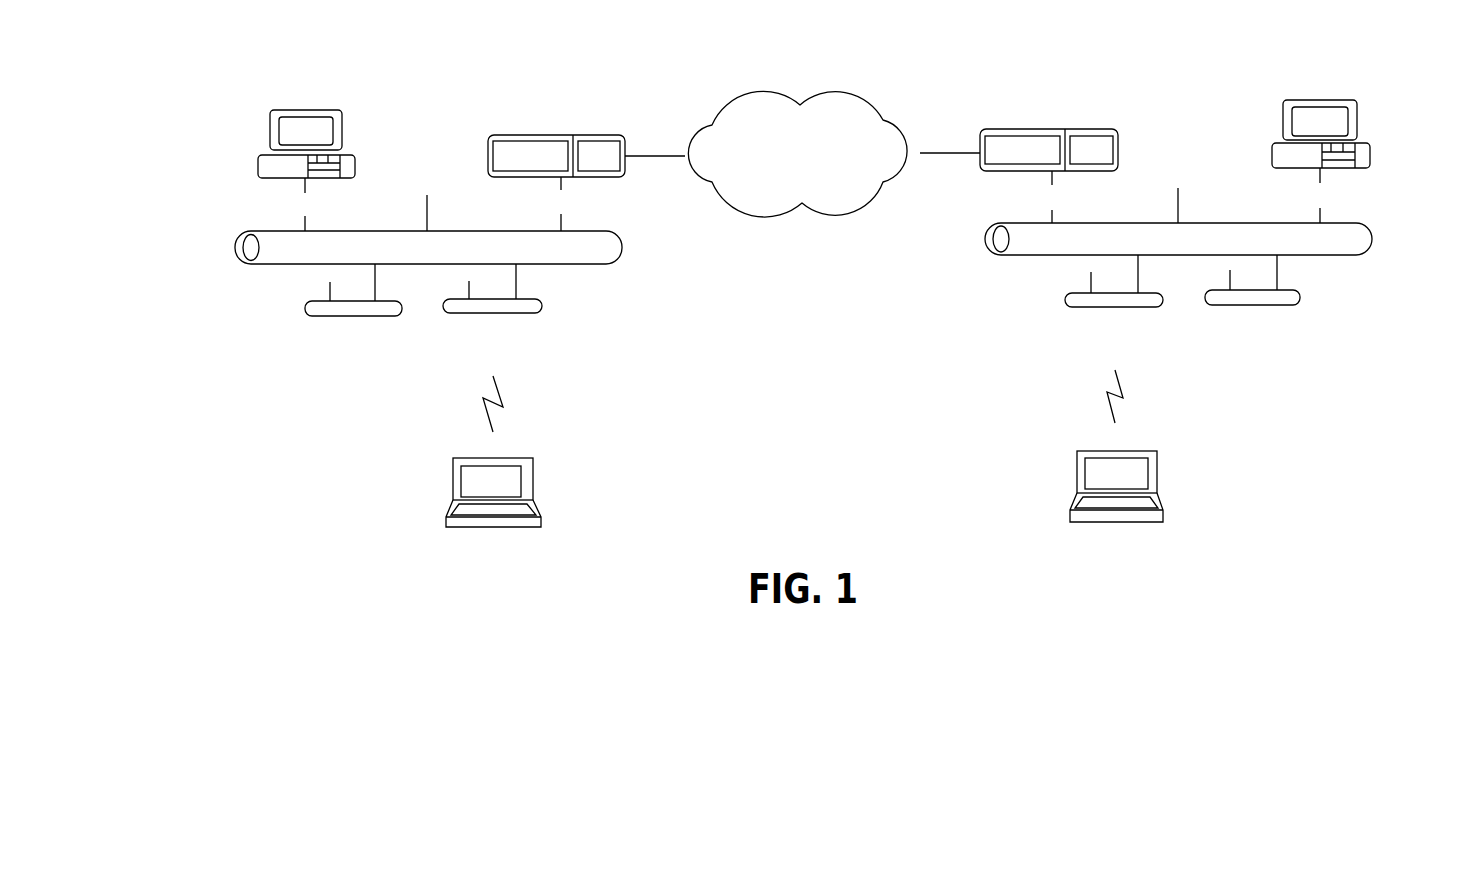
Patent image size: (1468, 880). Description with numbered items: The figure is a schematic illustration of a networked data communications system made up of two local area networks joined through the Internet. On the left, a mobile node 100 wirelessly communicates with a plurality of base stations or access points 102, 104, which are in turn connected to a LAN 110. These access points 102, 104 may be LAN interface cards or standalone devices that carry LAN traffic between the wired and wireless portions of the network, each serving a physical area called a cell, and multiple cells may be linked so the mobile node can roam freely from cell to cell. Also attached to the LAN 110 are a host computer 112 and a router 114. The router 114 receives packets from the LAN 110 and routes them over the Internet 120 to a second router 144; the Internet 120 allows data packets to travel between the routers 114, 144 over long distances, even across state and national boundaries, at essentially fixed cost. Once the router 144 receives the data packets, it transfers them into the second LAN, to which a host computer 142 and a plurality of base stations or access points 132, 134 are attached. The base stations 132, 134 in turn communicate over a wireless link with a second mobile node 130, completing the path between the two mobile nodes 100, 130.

The mobile node 100 is at (453, 478).
The access point 102 is at (303, 308).
The access point 104 is at (545, 304).
The LAN 110 is at (235, 247).
The host computer 112 is at (306, 110).
The router 114 is at (560, 135).
The Internet 120 is at (763, 92).
The second mobile node 130 is at (1160, 472).
The access point 132 is at (1063, 300).
The access point 134 is at (1305, 297).
The host computer 142 is at (1320, 100).
The router 144 is at (1052, 129).